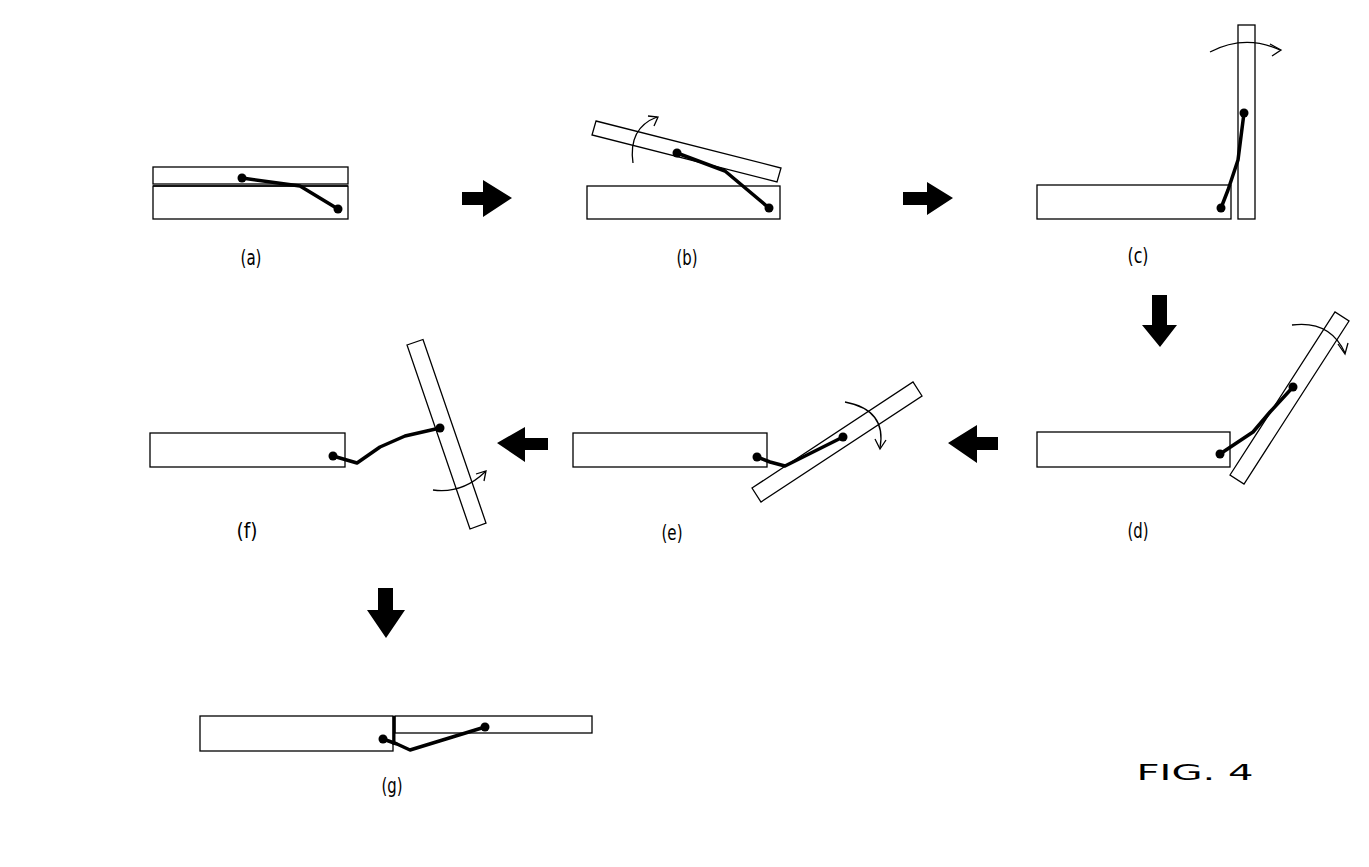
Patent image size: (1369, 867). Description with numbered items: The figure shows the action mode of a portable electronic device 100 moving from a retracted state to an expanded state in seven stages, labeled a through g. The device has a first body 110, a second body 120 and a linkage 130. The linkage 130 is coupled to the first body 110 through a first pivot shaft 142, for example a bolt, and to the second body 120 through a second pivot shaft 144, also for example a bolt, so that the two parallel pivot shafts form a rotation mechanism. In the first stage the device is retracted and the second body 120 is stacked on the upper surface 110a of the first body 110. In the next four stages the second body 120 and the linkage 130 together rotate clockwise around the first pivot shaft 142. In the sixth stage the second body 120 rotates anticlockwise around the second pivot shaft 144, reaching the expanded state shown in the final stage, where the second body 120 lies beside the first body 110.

The portable electronic device 100 is at (749, 410).
The first body 110 is at (340, 200).
The upper surface 110a is at (209, 183).
The second body 120 is at (340, 178).
The linkage 130 is at (320, 190).
The first pivot shaft 142 is at (342, 212).
The second pivot shaft 144 is at (244, 175).